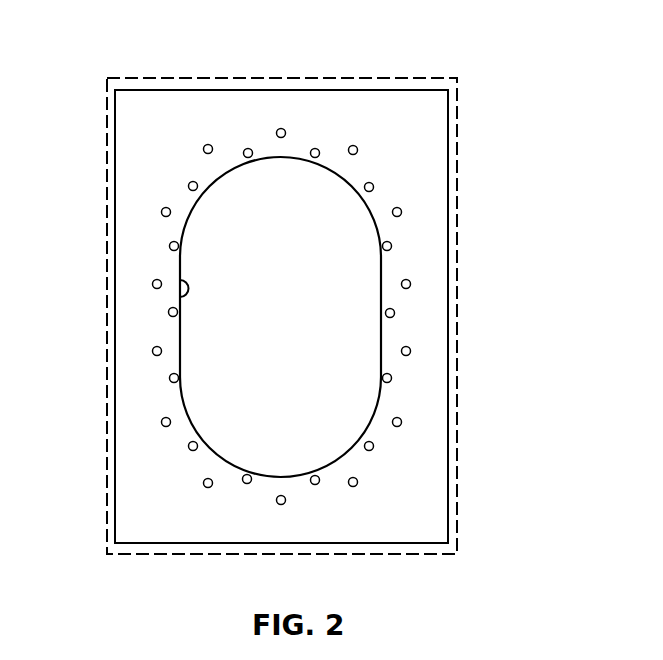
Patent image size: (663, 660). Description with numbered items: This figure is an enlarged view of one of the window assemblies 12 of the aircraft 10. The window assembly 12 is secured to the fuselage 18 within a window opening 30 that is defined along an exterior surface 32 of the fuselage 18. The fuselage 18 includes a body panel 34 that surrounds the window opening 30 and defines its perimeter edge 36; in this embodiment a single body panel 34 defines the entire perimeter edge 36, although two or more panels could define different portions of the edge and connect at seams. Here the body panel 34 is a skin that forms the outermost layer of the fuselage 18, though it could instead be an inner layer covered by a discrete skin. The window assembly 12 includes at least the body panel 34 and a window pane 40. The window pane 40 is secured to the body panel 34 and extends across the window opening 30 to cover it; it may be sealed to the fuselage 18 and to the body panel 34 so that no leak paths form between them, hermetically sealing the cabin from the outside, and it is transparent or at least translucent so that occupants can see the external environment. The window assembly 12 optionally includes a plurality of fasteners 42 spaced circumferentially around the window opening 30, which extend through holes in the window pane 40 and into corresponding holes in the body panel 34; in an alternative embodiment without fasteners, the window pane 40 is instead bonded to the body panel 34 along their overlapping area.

The aircraft 10 is at (371, 72).
The window assembly 12 is at (153, 110).
The fuselage 18 is at (427, 120).
The window opening 30 is at (380, 210).
The exterior surface 32 is at (423, 253).
The body panel 34 is at (148, 245).
The perimeter edge 36 is at (181, 302).
The window pane 40 is at (312, 345).
The fasteners 42 is at (170, 378).